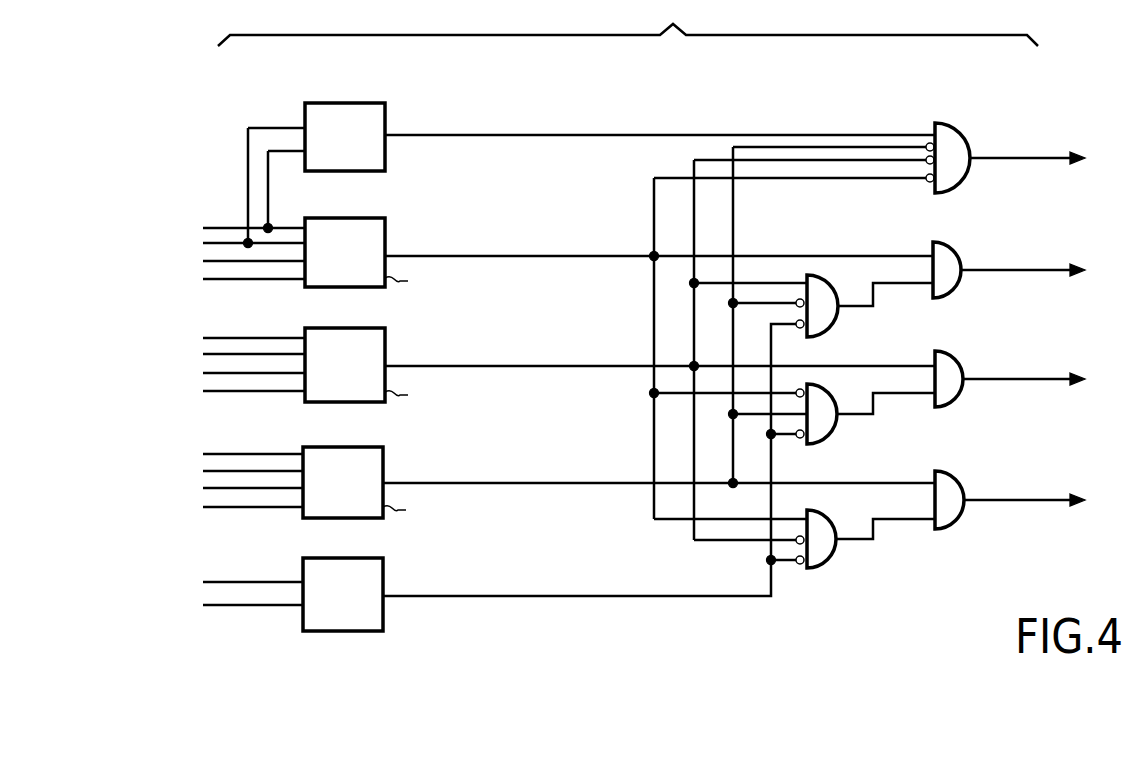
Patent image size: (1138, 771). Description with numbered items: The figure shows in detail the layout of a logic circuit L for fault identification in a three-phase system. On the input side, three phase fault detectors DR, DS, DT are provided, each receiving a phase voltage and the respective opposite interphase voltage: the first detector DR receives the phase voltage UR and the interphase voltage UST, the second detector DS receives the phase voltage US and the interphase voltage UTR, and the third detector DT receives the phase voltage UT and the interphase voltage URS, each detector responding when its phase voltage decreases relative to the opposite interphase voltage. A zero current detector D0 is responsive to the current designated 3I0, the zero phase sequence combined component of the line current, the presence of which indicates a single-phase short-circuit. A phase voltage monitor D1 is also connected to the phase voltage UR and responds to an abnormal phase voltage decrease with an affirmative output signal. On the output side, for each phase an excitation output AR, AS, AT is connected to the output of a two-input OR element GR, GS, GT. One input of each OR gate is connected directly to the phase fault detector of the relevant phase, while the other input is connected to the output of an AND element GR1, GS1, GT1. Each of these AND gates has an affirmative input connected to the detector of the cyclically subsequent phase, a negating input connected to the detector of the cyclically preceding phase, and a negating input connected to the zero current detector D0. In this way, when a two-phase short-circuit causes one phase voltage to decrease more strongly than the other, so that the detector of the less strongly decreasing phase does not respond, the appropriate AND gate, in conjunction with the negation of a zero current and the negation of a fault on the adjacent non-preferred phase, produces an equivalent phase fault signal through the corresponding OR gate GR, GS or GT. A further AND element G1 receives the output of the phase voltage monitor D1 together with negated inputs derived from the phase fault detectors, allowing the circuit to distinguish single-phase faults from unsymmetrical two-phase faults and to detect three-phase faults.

The logic circuit L is at (628, 23).
The phase voltage monitor D1 is at (385, 107).
The phase fault detector DR is at (385, 222).
The phase fault detector DS is at (385, 338).
The phase fault detector DT is at (383, 452).
The zero current detector D0 is at (383, 563).
The AND element G1 is at (958, 127).
The OR element GR is at (952, 250).
The OR element GS is at (952, 360).
The OR element GT is at (952, 480).
The AND element GR1 is at (833, 320).
The AND element GS1 is at (833, 430).
The AND element GT1 is at (833, 555).
The excitation output AR is at (1037, 271).
The excitation output AS is at (1033, 380).
The excitation output AT is at (1037, 501).
The phase voltage UR is at (230, 240).
The interphase voltage UST is at (230, 278).
The phase voltage US is at (230, 350).
The interphase voltage UTR is at (230, 390).
The phase voltage UT is at (229, 467).
The interphase voltage URS is at (229, 508).
The zero phase sequence current 3I0 is at (225, 599).